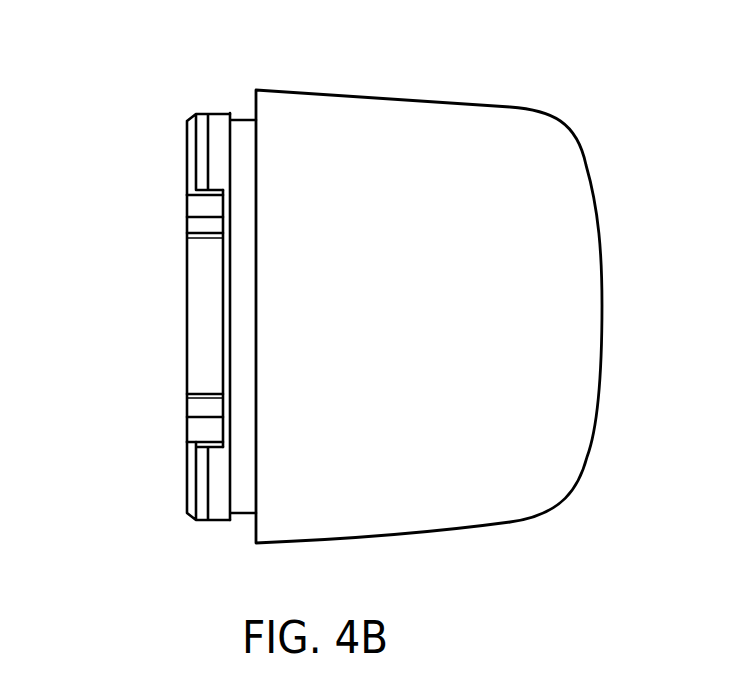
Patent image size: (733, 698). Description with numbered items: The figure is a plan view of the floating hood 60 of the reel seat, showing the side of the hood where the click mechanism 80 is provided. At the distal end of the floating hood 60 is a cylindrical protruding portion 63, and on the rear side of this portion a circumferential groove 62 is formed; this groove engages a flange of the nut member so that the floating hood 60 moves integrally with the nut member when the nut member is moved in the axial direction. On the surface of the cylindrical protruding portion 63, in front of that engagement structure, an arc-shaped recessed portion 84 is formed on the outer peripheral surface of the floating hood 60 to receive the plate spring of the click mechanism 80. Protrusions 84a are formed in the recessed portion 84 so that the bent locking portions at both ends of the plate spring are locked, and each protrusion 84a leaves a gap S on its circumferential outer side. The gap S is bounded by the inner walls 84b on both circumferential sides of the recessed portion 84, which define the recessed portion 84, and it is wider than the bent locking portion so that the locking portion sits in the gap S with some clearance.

The floating hood 60 is at (527, 100).
The circumferential groove 62 is at (240, 116).
The cylindrical protruding portion 63 is at (220, 146).
The click mechanism 80 is at (173, 317).
The recessed portion 84 is at (203, 361).
The protrusion 84a is at (202, 224).
The inner wall 84b is at (198, 205).
The gap S is at (223, 205).